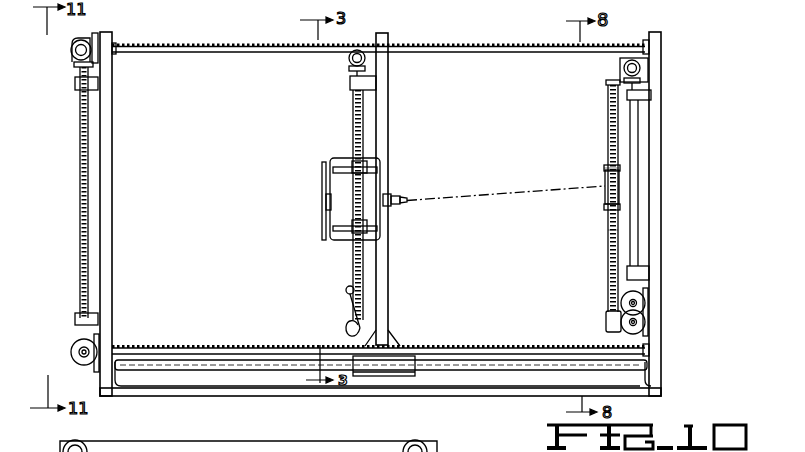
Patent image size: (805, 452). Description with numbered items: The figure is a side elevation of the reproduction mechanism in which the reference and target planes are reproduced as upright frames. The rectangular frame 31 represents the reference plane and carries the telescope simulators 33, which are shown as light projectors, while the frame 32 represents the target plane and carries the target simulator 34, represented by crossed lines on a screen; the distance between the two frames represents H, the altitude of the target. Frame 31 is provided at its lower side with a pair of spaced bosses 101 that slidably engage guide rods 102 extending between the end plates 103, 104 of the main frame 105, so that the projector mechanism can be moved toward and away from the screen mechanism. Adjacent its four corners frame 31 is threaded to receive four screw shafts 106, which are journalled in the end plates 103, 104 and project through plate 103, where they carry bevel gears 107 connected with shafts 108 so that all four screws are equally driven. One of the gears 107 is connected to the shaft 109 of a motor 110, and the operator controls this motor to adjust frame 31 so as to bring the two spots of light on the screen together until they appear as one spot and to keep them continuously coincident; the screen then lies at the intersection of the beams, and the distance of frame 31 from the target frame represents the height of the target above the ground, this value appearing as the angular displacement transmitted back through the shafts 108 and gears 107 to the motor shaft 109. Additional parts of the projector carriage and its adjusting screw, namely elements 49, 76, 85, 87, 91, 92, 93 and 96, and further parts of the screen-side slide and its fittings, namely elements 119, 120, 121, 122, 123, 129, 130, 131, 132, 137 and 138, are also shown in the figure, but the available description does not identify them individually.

The rectangular frame 31 is at (398, 254).
The frame 32 is at (598, 244).
The telescope simulators 33 is at (398, 190).
The target simulator 34 is at (595, 173).
The axis line 49 is at (488, 198).
The carriage housing 76 is at (346, 244).
The hand wheel 85 is at (322, 165).
The knob 87 is at (324, 221).
The traveling nut 91 is at (352, 164).
The central lead screw 92 is at (352, 116).
The eye bolt 93 is at (349, 66).
The locking lever 96 is at (352, 308).
The spaced bosses 101 is at (394, 372).
The guide rods 102 is at (302, 372).
The end plate 103 is at (112, 226).
The end plate 104 is at (661, 214).
The main frame 105 is at (462, 396).
The screw shafts 106 is at (460, 50).
The bevel gears 107 is at (94, 34).
The shafts 108 is at (80, 248).
The motor shaft 109 is at (80, 354).
The motor 110 is at (72, 345).
The slide block 119 is at (606, 194).
The stop collar 120 is at (609, 165).
The right lead screw 121 is at (608, 124).
The bearing housing 122 is at (620, 68).
The lower block 123 is at (606, 319).
The eye ring 129 is at (637, 77).
The guide rod 130 is at (637, 162).
The pivot pin 131 is at (643, 304).
The upper disc 132 is at (640, 297).
The pivot pin 137 is at (646, 322).
The lower disc 138 is at (646, 326).